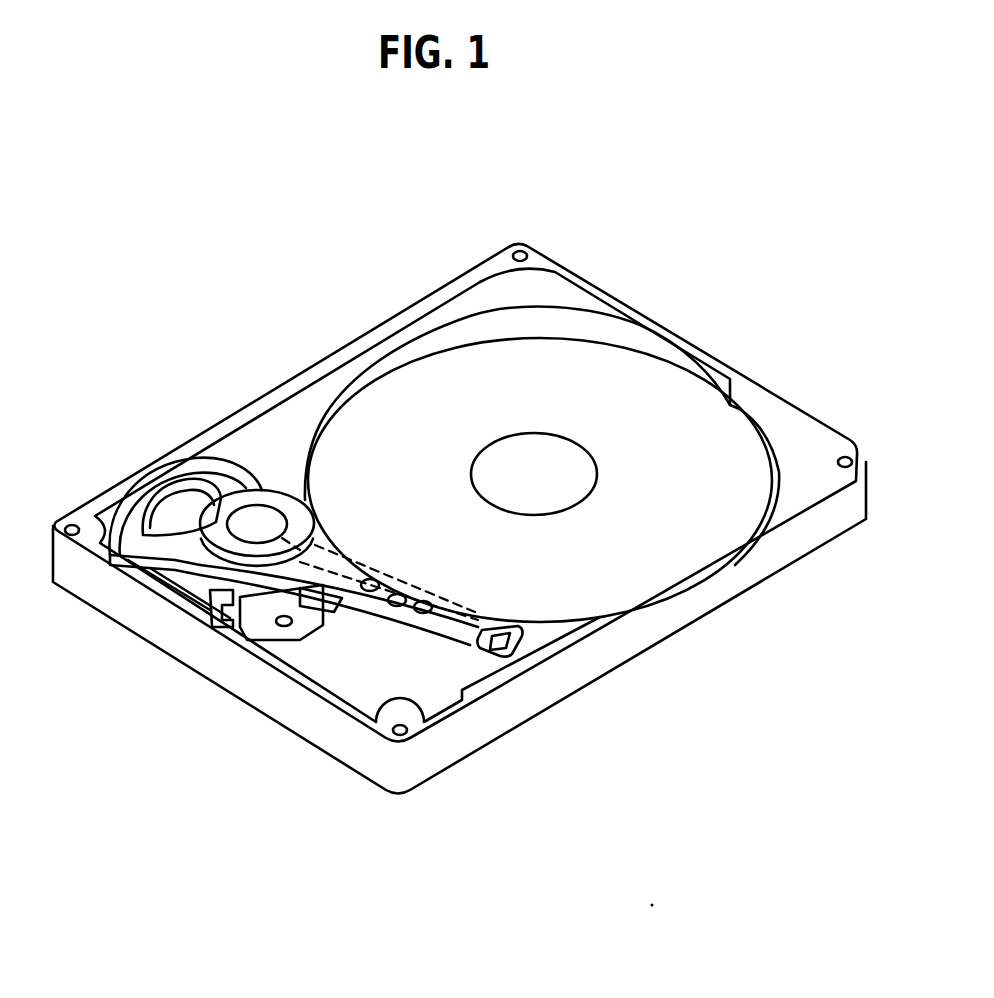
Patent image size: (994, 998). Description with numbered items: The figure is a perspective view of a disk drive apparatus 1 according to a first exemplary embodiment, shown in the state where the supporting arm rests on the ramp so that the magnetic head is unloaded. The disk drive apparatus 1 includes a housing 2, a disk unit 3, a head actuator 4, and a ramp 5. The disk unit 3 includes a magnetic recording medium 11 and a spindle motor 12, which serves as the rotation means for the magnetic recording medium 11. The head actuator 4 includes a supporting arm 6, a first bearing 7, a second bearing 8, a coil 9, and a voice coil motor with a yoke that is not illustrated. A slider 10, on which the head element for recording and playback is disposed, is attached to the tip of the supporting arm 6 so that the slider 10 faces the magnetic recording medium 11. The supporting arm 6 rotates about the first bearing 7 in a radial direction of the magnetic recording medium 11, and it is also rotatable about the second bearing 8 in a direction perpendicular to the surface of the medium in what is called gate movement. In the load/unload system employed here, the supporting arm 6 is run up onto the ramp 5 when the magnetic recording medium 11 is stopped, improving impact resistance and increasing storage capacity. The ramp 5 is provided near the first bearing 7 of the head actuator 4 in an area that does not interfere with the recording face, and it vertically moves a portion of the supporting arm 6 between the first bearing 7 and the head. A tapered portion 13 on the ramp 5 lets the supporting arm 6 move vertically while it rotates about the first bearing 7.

The disk drive apparatus 1 is at (683, 688).
The housing 2 is at (810, 413).
The disk unit 3 is at (571, 393).
The head actuator 4 is at (272, 431).
The ramp 5 is at (270, 617).
The supporting arm 6 is at (347, 538).
The first bearing 7 is at (258, 527).
The second bearing 8 is at (207, 523).
The coil 9 is at (133, 513).
The slider 10 is at (507, 650).
The magnetic recording medium 11 is at (528, 372).
The spindle motor 12 is at (577, 465).
The tapered portion 13 is at (315, 597).